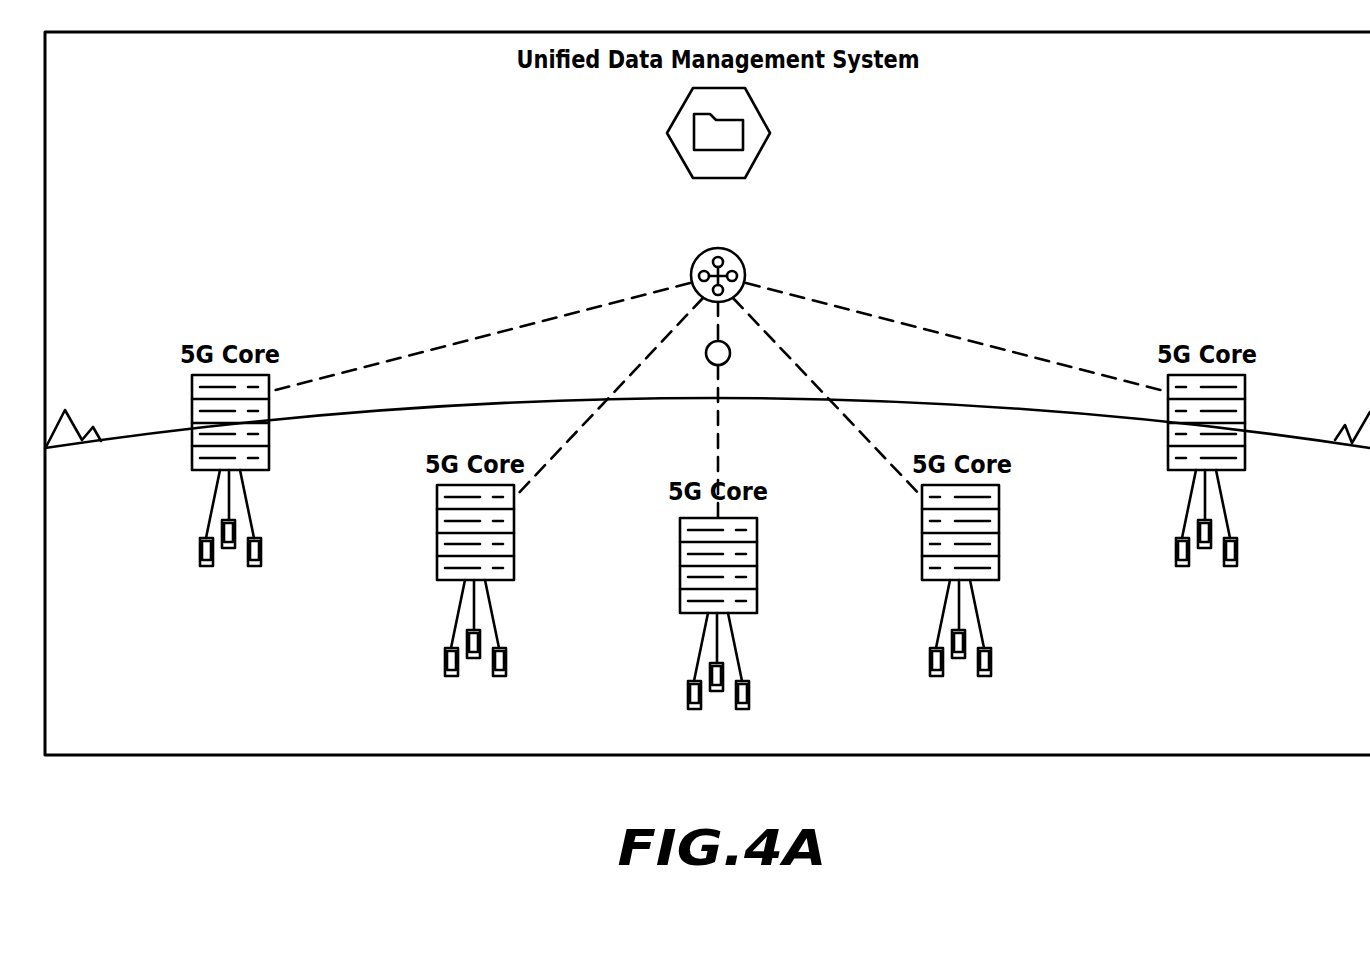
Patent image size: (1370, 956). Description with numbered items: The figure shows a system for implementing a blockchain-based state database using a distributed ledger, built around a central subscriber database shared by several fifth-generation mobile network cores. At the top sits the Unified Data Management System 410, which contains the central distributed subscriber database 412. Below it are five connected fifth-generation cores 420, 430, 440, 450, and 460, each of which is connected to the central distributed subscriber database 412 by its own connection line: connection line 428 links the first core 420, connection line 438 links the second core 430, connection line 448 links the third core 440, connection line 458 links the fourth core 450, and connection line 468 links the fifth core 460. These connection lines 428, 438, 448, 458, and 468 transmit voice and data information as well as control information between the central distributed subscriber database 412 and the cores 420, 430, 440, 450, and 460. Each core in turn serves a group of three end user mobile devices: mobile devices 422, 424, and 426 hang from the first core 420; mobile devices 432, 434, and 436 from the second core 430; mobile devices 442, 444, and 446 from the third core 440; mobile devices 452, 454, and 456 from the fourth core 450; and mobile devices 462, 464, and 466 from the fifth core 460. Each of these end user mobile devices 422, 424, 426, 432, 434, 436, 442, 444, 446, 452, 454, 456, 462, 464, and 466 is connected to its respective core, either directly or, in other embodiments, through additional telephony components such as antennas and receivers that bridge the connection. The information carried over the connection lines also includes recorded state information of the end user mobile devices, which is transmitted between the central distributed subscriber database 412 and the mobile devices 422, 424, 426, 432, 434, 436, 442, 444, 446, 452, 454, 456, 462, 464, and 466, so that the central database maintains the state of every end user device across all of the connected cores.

The Unified Data Management System 410 is at (757, 106).
The central distributed subscriber database 412 is at (735, 141).
The 5G Core 420 is at (192, 392).
The 5G end user mobile device 422 is at (200, 549).
The 5G end user mobile device 424 is at (230, 549).
The 5G end user mobile device 426 is at (262, 553).
The connection line 428 is at (600, 302).
The 5G Core 430 is at (437, 502).
The 5G end user mobile device 432 is at (445, 659).
The 5G end user mobile device 434 is at (475, 659).
The 5G end user mobile device 436 is at (507, 663).
The connection line 438 is at (634, 366).
The 5G Core 440 is at (680, 535).
The 5G end user mobile device 442 is at (688, 692).
The 5G end user mobile device 444 is at (718, 692).
The 5G end user mobile device 446 is at (750, 696).
The connection line 448 is at (722, 396).
The 5G Core 450 is at (999, 498).
The 5G end user mobile device 452 is at (930, 659).
The 5G end user mobile device 454 is at (960, 659).
The 5G end user mobile device 456 is at (992, 663).
The connection line 458 is at (802, 362).
The 5G Core 460 is at (1245, 388).
The 5G end user mobile device 462 is at (1176, 549).
The 5G end user mobile device 464 is at (1206, 549).
The 5G end user mobile device 466 is at (1238, 553).
The connection line 468 is at (836, 302).